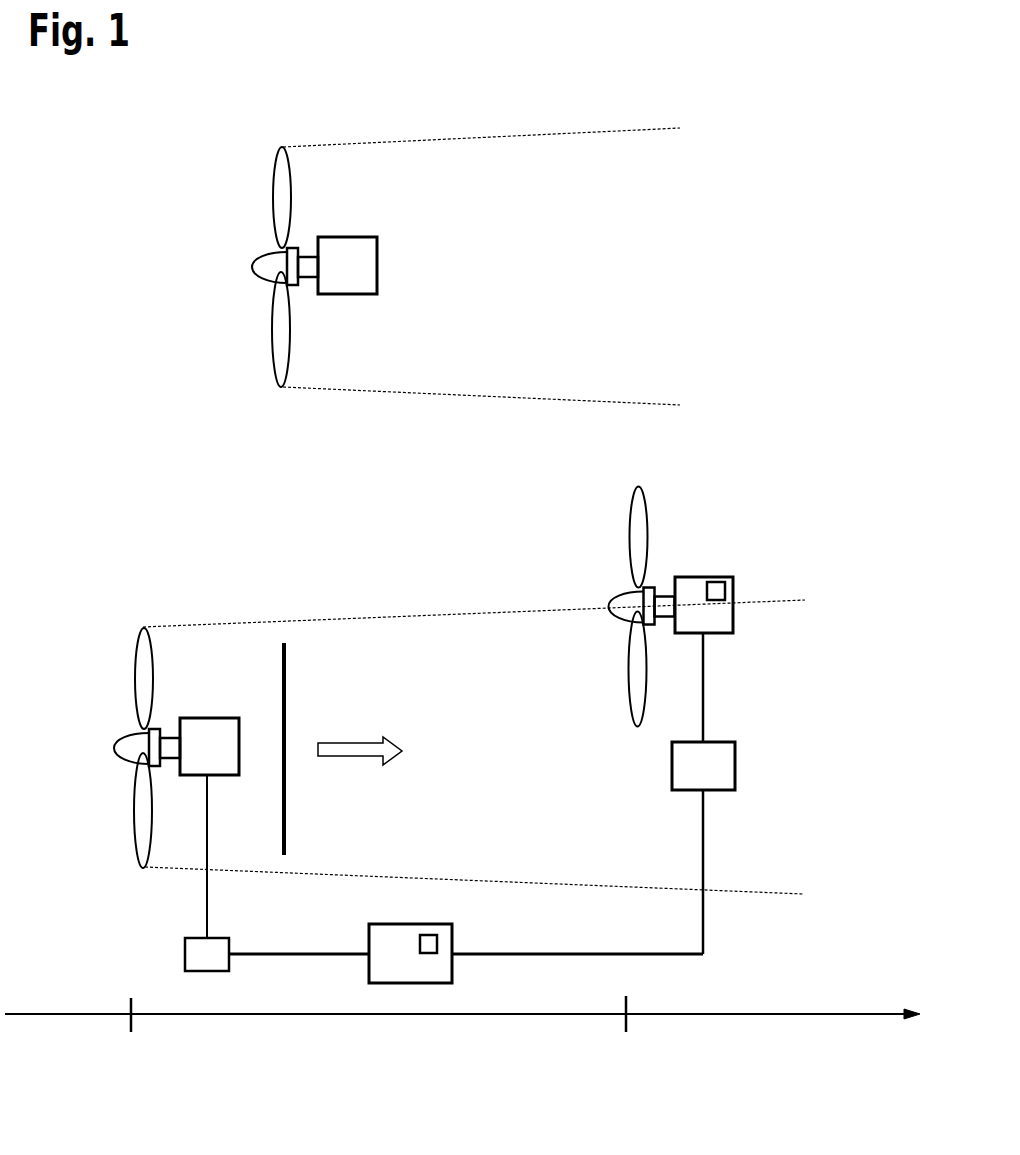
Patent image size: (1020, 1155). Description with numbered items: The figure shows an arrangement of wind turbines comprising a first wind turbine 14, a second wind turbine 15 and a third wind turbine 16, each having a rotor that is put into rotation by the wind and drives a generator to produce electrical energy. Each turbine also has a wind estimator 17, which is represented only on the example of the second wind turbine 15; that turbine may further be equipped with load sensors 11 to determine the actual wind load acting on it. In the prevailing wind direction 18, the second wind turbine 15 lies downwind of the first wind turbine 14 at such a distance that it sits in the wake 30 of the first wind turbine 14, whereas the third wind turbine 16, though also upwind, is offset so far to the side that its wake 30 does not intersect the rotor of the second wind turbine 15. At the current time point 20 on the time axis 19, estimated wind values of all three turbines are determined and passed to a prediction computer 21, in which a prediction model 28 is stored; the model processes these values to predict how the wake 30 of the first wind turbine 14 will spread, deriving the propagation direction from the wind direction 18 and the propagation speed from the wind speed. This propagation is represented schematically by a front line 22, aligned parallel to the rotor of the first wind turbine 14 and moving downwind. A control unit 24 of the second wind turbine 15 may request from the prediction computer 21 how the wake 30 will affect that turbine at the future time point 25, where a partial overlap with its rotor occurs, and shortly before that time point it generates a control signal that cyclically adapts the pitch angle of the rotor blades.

The load sensors 11 is at (715, 592).
The first wind turbine 14 is at (133, 683).
The second wind turbine 15 is at (705, 577).
The third wind turbine 16 is at (377, 265).
The wind estimator 17 is at (185, 953).
The wind direction 18 is at (352, 743).
The time axis 19 is at (738, 1016).
The current time point 20 is at (129, 1035).
The prediction computer 21 is at (397, 924).
The front line 22 is at (284, 797).
The control unit 24 is at (735, 766).
The future time point 25 is at (625, 1033).
The prediction model 28 is at (430, 935).
The wake 30 is at (357, 146).